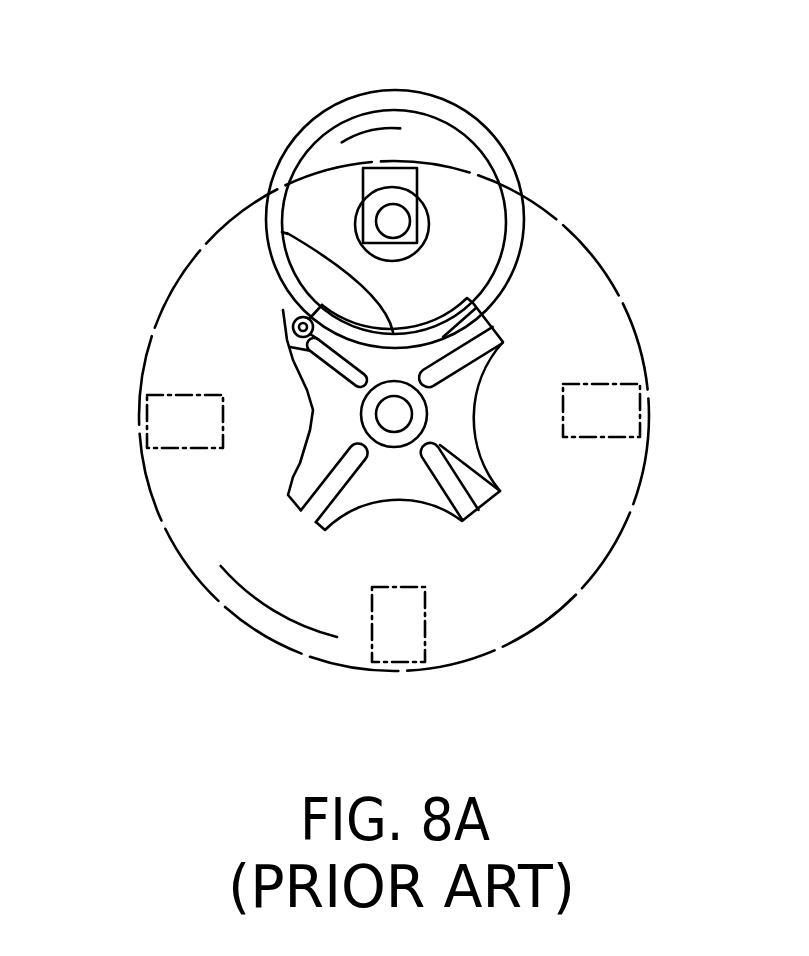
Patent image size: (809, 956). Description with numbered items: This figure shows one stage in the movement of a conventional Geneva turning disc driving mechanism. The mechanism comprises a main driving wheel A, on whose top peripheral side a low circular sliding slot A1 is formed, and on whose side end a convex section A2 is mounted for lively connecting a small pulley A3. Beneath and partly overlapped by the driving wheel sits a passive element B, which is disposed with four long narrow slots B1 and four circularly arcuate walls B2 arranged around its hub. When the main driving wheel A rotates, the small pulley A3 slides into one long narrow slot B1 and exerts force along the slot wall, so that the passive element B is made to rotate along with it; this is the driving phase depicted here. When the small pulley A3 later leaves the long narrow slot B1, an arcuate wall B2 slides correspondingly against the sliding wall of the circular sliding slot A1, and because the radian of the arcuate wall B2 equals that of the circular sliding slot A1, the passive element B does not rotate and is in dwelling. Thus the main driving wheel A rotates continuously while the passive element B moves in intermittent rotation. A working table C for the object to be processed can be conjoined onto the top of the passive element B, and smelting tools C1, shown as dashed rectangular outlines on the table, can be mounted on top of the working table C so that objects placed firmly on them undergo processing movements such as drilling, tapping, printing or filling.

The main driving wheel A is at (433, 140).
The low circular sliding slot A1 is at (487, 147).
The convex section A2 is at (294, 323).
The small pulley A3 is at (297, 318).
The passive element B is at (453, 433).
The long narrow slot B1 is at (465, 483).
The circularly arcuate wall B2 is at (490, 367).
The working table C is at (603, 353).
The smelting tool C1 is at (613, 415).